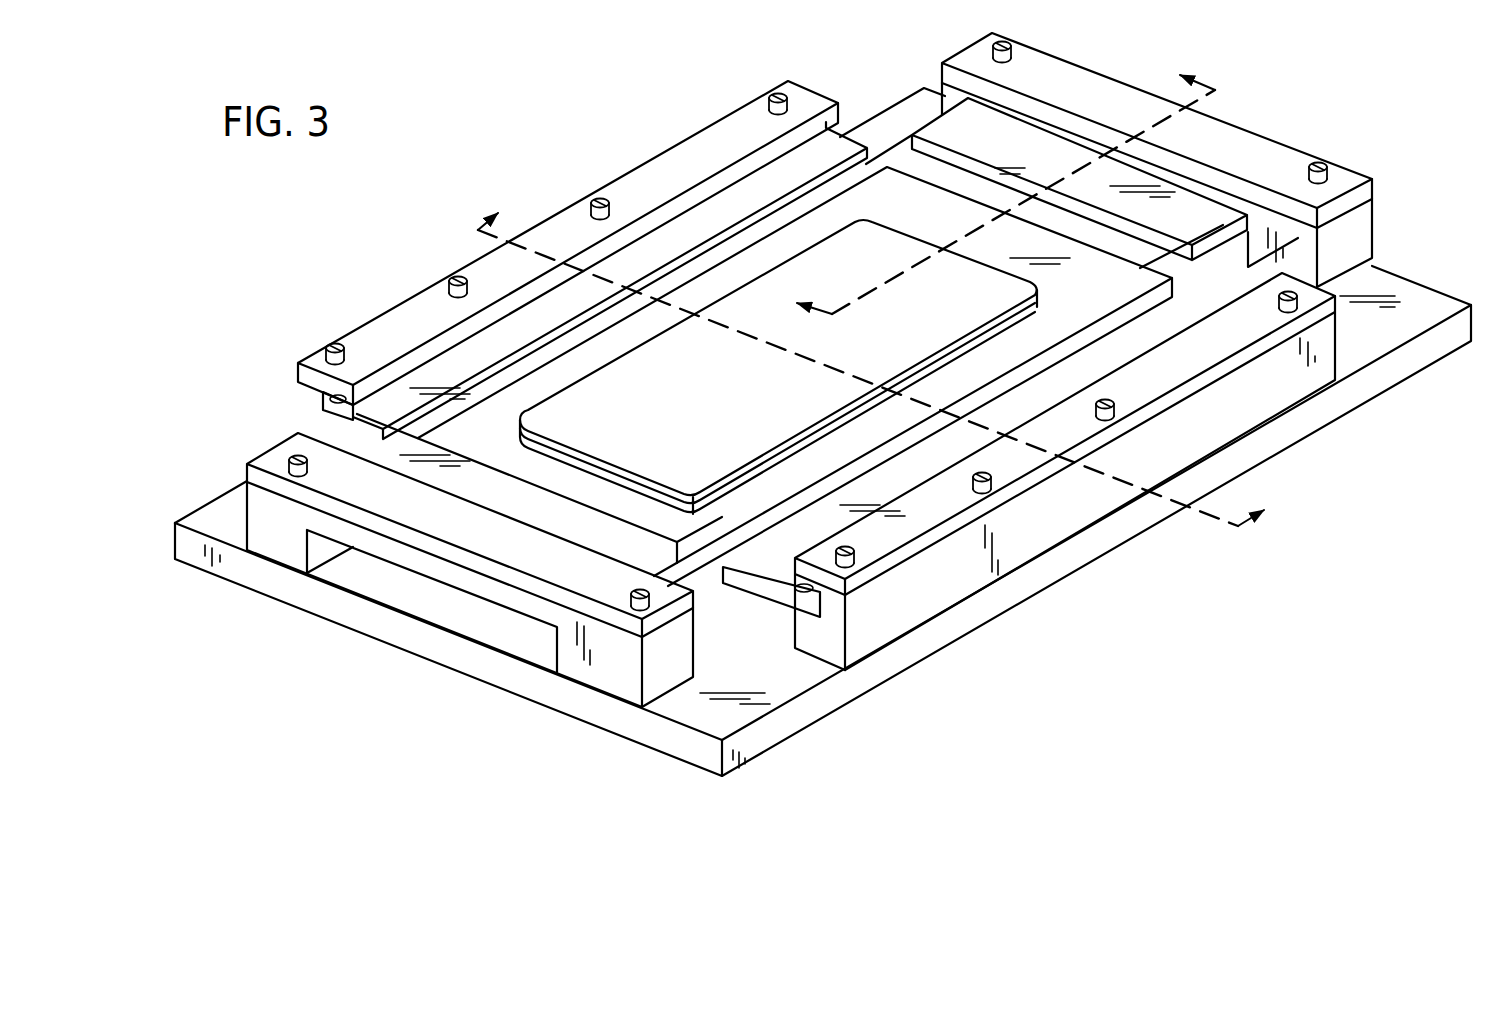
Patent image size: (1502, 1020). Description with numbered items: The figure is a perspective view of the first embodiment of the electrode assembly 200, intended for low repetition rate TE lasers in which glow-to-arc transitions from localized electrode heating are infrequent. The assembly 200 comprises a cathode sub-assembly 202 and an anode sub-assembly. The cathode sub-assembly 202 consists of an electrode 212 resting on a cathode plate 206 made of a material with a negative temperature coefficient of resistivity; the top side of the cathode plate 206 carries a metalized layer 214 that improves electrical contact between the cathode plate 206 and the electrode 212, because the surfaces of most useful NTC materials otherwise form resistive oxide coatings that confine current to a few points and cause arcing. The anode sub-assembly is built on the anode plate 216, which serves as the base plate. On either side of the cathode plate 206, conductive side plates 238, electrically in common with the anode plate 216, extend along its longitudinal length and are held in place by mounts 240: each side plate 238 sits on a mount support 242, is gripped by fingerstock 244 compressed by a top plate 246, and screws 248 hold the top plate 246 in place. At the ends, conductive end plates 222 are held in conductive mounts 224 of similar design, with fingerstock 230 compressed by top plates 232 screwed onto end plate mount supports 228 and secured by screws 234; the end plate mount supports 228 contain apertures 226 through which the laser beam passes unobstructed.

The electrode assembly 200 is at (982, 721).
The cathode sub-assembly 202 is at (705, 575).
The cathode plate 206 is at (890, 185).
The electrode 212 is at (878, 252).
The metalized layer 214 is at (1015, 322).
The anode plate 216 is at (776, 737).
The conductive end plates 222 is at (1010, 145).
The conductive mounts 224 is at (688, 700).
The apertures 226 is at (412, 608).
The end plate mount supports 228 is at (288, 540).
The fingerstock 230 is at (1198, 187).
The top plates 232 is at (1268, 152).
The screws 234 is at (1322, 165).
The conductive side plates 238 is at (737, 207).
The mounts 240 is at (376, 278).
The mount supports 242 is at (925, 592).
The fingerstock 244 is at (637, 232).
The top plates 246 is at (1225, 345).
The screws 248 is at (340, 345).